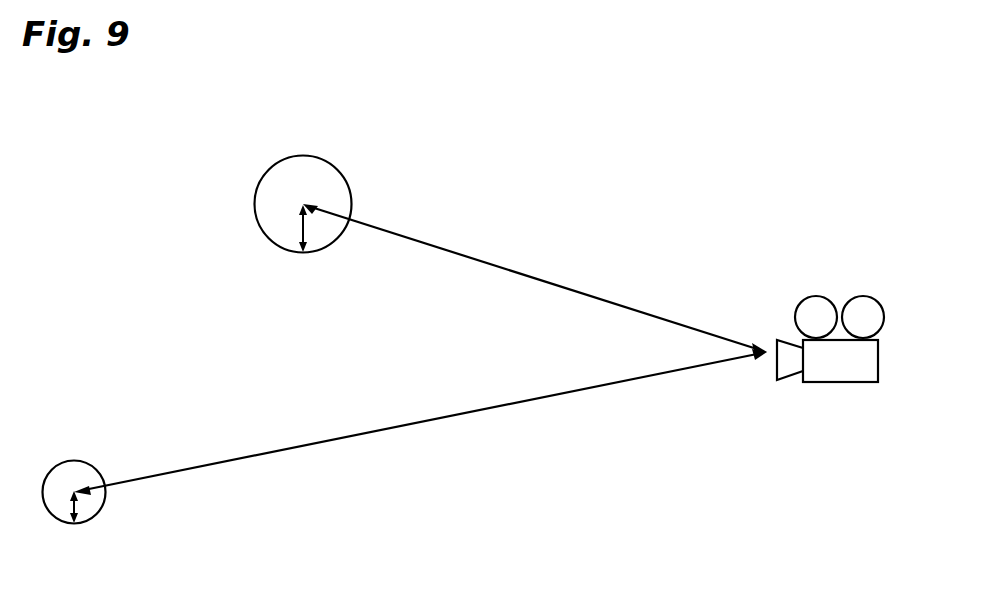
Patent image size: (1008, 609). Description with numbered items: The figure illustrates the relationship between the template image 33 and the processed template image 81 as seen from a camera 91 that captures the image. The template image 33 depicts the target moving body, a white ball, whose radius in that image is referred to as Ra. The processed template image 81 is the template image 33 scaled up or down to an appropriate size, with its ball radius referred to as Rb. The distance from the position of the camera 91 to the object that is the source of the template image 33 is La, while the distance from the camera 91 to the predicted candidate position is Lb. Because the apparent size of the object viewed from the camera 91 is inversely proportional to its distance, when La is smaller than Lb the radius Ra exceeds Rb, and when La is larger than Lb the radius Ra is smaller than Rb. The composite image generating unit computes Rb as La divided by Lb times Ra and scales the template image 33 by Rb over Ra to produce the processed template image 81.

The template image 33 is at (318, 157).
The processed template image 81 is at (70, 463).
The camera 91 is at (845, 387).
The radius of the ball in the template image Ra is at (295, 247).
The radius of the ball in the processed template image Rb is at (88, 522).
The distance from the camera to the object La is at (535, 279).
The distance from the camera to the candidate position Lb is at (420, 422).